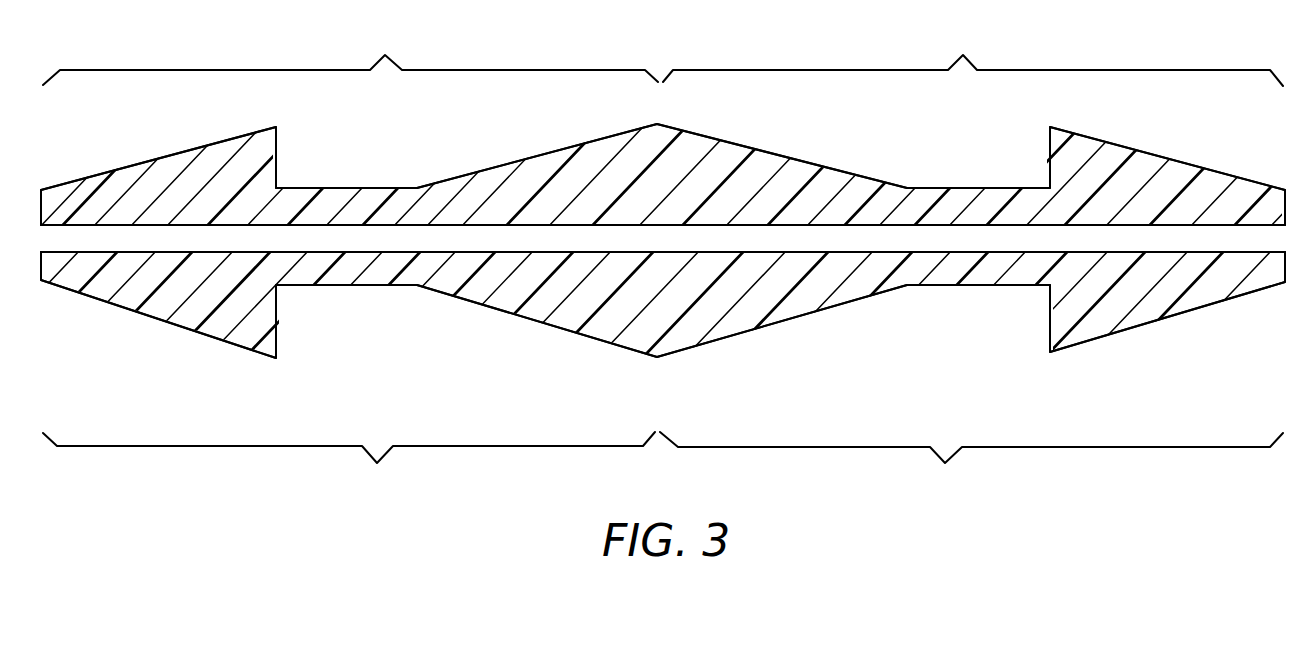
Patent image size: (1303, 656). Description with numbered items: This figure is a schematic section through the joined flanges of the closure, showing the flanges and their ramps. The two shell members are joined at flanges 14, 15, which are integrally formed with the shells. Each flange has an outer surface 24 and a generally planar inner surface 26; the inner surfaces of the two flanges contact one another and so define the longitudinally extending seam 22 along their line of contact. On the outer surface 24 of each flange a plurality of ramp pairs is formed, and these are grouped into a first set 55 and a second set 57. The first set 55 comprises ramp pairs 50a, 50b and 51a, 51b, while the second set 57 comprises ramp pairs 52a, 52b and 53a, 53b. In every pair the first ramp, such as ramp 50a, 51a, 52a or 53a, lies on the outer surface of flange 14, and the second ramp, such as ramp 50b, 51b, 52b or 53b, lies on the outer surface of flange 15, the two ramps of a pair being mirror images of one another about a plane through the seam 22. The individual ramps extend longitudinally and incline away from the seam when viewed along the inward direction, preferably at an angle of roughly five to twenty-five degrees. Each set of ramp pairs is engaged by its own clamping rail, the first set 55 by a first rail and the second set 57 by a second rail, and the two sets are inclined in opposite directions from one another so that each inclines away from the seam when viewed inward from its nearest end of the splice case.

The flange 14 is at (57, 196).
The flange 15 is at (62, 275).
The longitudinally extending seam 22 is at (453, 237).
The outer surface 24 is at (312, 187).
The inner surface 26 is at (382, 249).
The ramp 50a is at (172, 155).
The ramp 50b is at (147, 318).
The ramp 51a is at (527, 158).
The ramp 51b is at (522, 317).
The ramp 52a is at (782, 155).
The ramp 52b is at (783, 318).
The ramp 53a is at (1147, 150).
The ramp 53b is at (1157, 318).
The first set of ramp pairs 55 is at (350, 265).
The second set of ramp pairs 57 is at (971, 265).